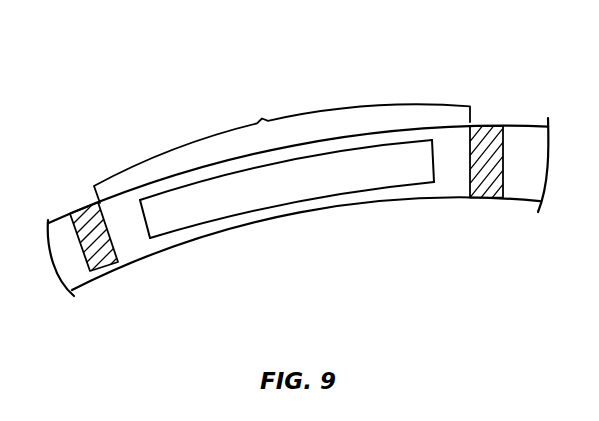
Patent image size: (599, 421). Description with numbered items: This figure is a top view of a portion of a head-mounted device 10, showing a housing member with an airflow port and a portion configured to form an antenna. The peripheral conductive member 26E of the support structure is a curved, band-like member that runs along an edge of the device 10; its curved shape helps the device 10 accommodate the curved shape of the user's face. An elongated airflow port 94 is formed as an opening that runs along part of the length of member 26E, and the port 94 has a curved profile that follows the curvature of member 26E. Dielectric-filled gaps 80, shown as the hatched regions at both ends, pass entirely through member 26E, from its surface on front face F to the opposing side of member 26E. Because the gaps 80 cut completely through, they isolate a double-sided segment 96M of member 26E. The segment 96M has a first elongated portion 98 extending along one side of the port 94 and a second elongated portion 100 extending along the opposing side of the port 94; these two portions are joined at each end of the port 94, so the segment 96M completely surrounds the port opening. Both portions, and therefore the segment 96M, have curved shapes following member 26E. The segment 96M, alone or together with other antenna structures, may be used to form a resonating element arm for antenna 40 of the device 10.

The device 10 is at (294, 147).
The antenna 40 is at (397, 51).
The peripheral conductive member 26E is at (85, 285).
The dielectric-filled gaps 80 is at (110, 263).
The airflow port 94 is at (287, 186).
The double-sided segment 96M is at (282, 149).
The first elongated portion 98 is at (338, 141).
The second elongated portion 100 is at (335, 202).
The front face F is at (174, 113).